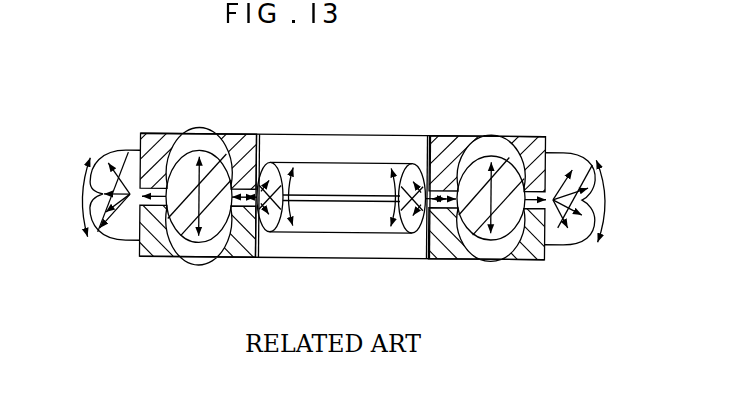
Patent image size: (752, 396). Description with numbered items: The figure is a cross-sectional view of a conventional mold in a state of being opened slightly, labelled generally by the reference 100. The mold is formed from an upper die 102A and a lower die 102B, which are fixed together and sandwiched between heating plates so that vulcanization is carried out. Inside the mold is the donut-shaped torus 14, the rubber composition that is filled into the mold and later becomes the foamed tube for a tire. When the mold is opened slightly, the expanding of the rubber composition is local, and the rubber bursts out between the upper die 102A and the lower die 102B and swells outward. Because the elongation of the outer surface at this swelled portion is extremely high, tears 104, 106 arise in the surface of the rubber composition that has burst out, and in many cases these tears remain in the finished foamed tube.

The donut-shaped torus 14 is at (213, 162).
The related-art rolling bearing 100 is at (342, 155).
The upper die 102A is at (354, 141).
The lower die 102B is at (330, 272).
The tear 104 is at (346, 154).
The tear 106 is at (312, 196).